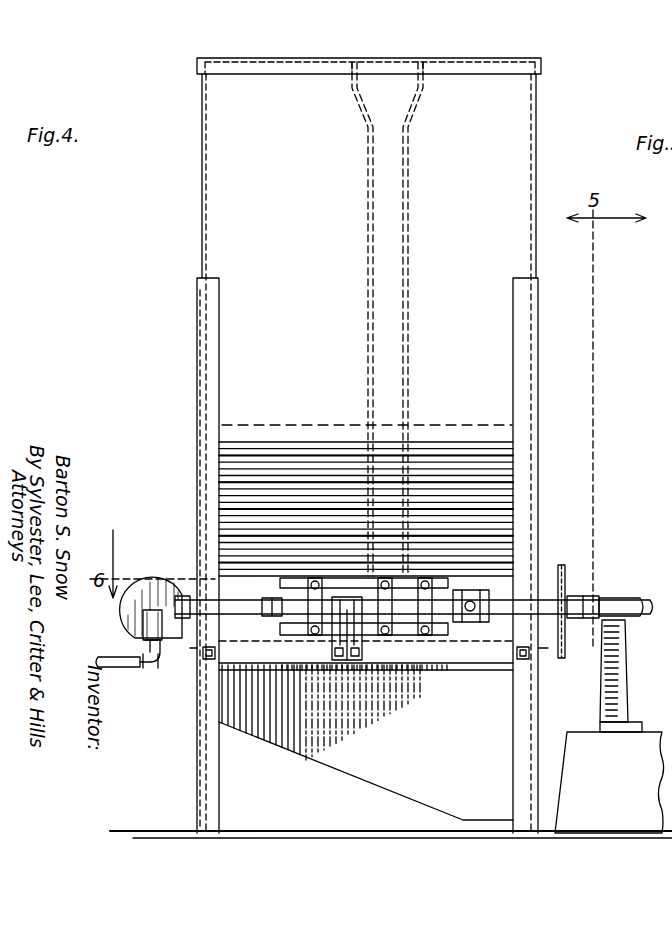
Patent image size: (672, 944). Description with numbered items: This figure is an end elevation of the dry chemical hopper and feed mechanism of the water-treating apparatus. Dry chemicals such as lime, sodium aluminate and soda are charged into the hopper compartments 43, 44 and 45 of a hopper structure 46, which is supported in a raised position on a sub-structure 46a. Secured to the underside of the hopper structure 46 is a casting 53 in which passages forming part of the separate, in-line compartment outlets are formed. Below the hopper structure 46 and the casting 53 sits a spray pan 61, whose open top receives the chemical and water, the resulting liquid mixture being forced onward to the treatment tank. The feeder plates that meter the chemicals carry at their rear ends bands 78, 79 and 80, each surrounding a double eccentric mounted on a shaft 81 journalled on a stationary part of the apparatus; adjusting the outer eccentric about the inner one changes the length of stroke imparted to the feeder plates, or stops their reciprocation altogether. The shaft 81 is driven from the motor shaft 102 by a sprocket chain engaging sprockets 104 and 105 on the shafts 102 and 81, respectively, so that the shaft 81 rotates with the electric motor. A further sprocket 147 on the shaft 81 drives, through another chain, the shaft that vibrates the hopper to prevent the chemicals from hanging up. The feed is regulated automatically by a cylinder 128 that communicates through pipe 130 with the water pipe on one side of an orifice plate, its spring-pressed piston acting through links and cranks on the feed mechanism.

The hopper compartment 43 is at (203, 208).
The hopper compartment 44 is at (380, 226).
The hopper compartment 45 is at (522, 170).
The hopper structure 46 is at (366, 420).
The sub-structure 46a is at (590, 340).
The casting 53 is at (338, 578).
The spray pan 61 is at (366, 742).
The band 78 is at (305, 578).
The band 79 is at (376, 578).
The band 80 is at (440, 578).
The shaft 81 is at (240, 612).
The motor shaft 102 is at (636, 606).
The sprocket 104 is at (562, 565).
The sprocket 105 is at (570, 592).
The cylinder 128 is at (148, 572).
The pipe 130 is at (112, 662).
The sprocket 147 is at (468, 622).